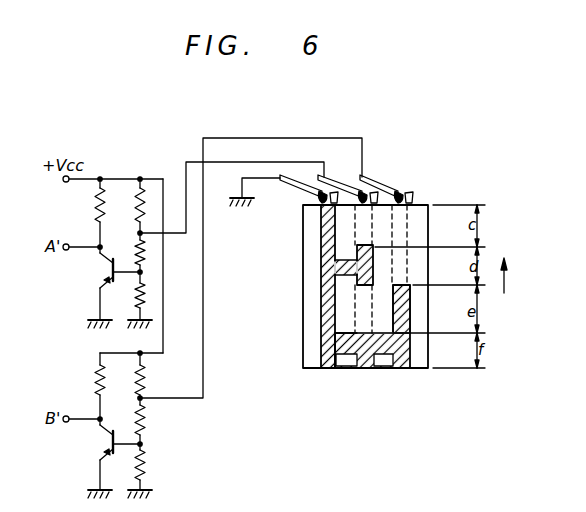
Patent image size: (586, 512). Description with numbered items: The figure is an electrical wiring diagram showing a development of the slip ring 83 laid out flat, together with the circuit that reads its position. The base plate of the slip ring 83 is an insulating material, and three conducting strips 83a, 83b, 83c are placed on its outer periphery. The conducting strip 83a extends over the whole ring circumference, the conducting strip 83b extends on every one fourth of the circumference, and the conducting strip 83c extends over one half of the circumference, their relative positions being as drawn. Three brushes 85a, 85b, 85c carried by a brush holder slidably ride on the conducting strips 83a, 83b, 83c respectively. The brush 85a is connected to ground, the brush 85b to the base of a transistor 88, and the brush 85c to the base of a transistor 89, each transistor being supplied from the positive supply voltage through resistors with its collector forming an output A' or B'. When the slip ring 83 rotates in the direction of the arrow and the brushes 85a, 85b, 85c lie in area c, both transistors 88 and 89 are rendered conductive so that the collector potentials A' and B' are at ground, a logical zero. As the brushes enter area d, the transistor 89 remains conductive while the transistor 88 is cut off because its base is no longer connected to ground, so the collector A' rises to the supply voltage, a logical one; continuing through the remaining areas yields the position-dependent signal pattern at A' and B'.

The slip ring 83 is at (303, 340).
The conducting strip 83a is at (333, 368).
The conducting strip 83b is at (371, 368).
The conducting strip 83c is at (405, 368).
The brush 85a is at (300, 187).
The brush 85b is at (368, 180).
The brush 85c is at (400, 188).
The transistor 88 is at (102, 271).
The transistor 89 is at (102, 445).